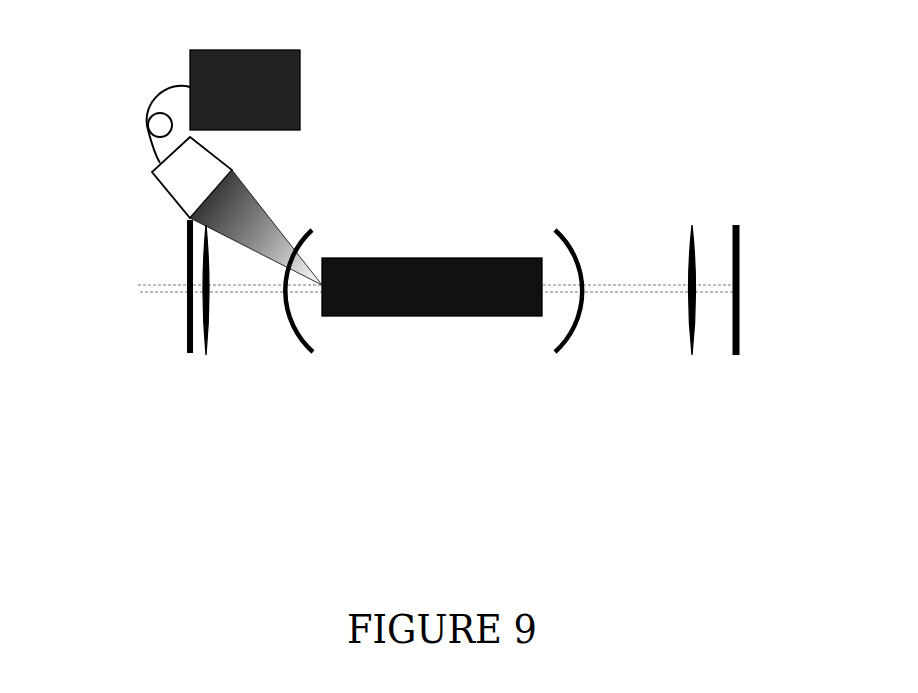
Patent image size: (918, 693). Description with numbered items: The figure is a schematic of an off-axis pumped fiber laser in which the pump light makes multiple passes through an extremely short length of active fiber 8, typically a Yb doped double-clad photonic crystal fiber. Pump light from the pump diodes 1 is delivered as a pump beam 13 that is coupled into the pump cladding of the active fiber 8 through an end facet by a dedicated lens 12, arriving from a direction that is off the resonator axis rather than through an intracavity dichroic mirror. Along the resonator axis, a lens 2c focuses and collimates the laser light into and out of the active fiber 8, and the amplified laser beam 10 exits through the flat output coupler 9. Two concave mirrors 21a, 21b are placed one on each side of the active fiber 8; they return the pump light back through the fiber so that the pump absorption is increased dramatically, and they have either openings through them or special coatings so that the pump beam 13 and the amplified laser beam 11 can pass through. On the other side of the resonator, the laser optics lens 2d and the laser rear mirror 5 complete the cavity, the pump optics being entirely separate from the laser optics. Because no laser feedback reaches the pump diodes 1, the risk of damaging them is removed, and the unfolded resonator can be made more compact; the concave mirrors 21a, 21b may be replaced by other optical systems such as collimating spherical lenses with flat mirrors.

The pump diodes 1 is at (292, 50).
The dedicated lens 12 is at (150, 180).
The pump beam 13 is at (245, 193).
The amplified laser beam 10 is at (138, 292).
The flat output coupler 9 is at (184, 345).
The lens 2c is at (206, 358).
The concave mirror 21b is at (321, 271).
The active fiber 8 is at (442, 318).
The concave mirror 21a is at (567, 272).
The amplified laser beam 11 is at (633, 295).
The laser optics lens 2d is at (692, 218).
The laser rear mirror 5 is at (739, 235).